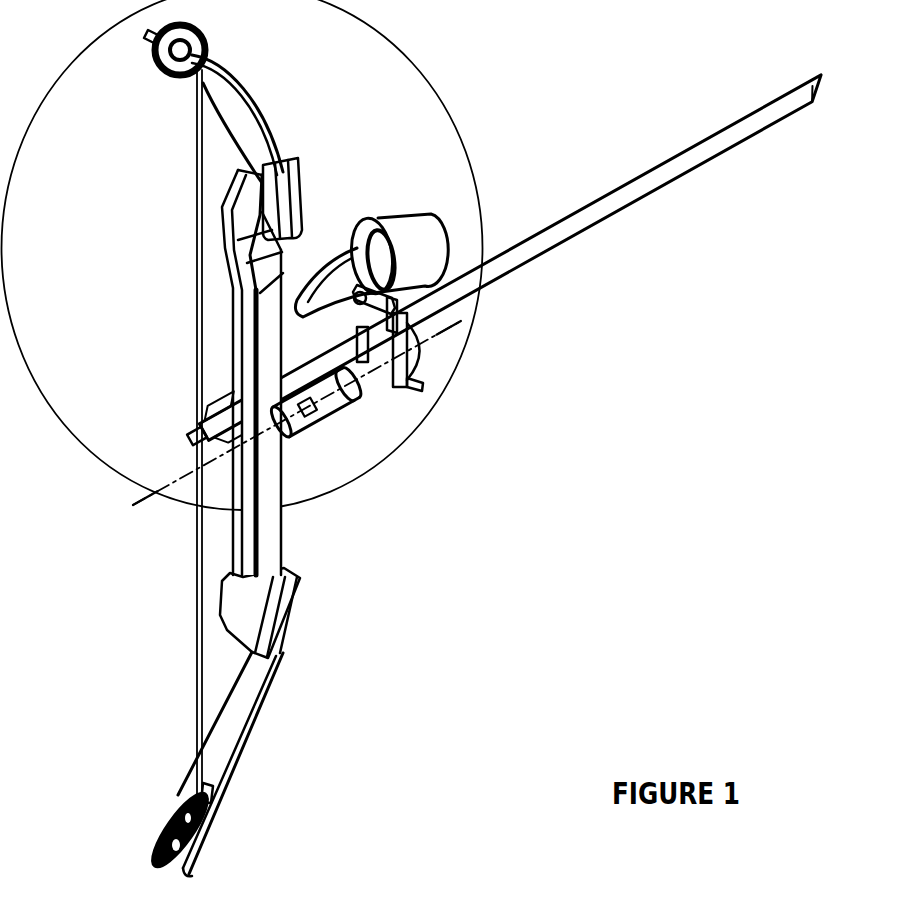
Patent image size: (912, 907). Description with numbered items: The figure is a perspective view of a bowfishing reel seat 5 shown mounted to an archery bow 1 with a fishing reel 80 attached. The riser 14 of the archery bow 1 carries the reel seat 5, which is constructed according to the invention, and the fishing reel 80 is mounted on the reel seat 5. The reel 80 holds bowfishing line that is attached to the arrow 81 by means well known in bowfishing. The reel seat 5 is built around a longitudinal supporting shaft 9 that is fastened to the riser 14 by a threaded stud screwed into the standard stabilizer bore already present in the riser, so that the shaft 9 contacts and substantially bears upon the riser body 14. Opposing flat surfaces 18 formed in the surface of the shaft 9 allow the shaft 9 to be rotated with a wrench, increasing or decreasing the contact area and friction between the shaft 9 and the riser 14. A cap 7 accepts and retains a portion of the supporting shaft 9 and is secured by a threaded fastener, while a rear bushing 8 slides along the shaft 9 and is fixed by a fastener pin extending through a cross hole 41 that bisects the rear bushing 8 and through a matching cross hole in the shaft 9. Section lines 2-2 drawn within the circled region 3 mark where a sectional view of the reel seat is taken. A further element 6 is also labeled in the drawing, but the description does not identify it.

The archery bow 1 is at (260, 792).
The section lines 2- 2 is at (140, 508).
The region 3 is at (45, 397).
The bowfishing reel seat 5 is at (422, 406).
The arrow rest assembly 6 is at (365, 352).
The cap 7 is at (413, 360).
The rear bushing 8 is at (390, 397).
The longitudinal supporting shaft 9 is at (300, 437).
The riser 14 is at (293, 548).
The opposing flat surfaces 18 is at (355, 415).
The cross hole 41 is at (330, 420).
The fishing reel 80 is at (397, 230).
The arrow 81 is at (523, 253).